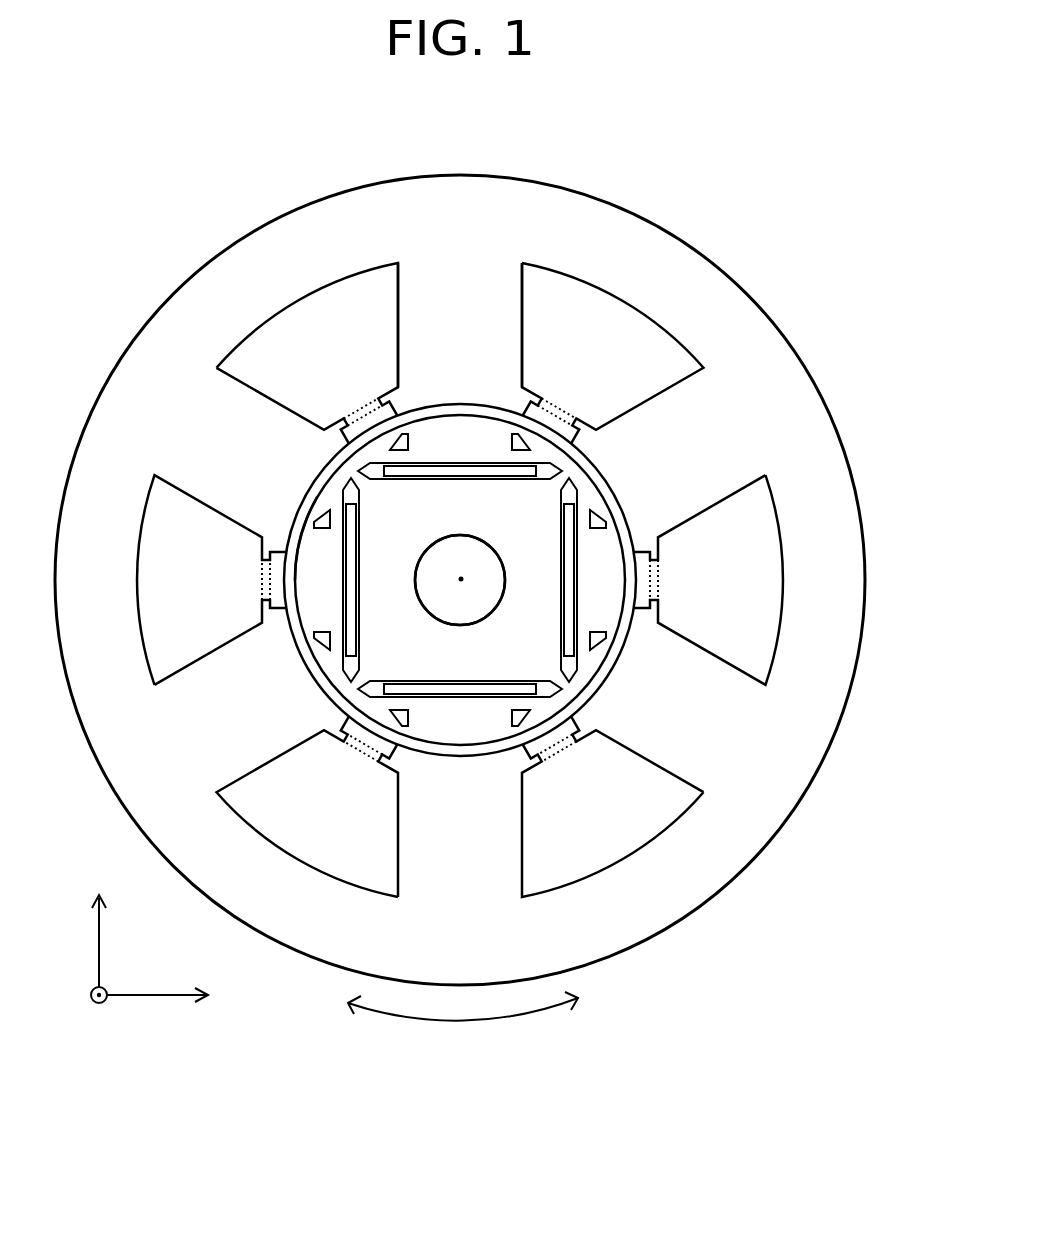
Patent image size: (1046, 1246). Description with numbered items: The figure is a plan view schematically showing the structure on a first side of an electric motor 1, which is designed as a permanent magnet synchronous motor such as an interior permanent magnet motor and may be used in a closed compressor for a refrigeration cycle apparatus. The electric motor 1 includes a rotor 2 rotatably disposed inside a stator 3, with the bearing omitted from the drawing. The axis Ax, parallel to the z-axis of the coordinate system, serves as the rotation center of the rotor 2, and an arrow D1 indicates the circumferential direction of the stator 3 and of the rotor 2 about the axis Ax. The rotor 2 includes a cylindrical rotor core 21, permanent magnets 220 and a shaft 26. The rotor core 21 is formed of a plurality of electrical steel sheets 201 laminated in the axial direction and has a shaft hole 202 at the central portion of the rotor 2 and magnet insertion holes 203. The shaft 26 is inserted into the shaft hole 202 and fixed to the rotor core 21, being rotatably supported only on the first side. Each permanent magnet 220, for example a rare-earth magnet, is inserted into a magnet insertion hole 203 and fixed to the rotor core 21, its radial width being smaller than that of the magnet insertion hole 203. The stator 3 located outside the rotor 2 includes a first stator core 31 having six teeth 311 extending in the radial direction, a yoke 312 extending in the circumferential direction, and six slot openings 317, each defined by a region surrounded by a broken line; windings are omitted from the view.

The electric motor 1 is at (148, 200).
The rotor 2 is at (437, 410).
The stator 3 is at (462, 172).
The rotor core 21 is at (474, 435).
The shaft 26 is at (426, 563).
The first stator core 31 is at (510, 195).
The tooth 311 is at (240, 447).
The yoke 312 is at (455, 225).
The slot opening 317 is at (353, 402).
The electrical steel sheet 201 is at (312, 557).
The shaft hole 202 is at (497, 562).
The magnet insertion hole 203 is at (488, 468).
The permanent magnet 220 is at (433, 468).
The axis Ax is at (461, 582).
The arrow D1 is at (462, 1022).